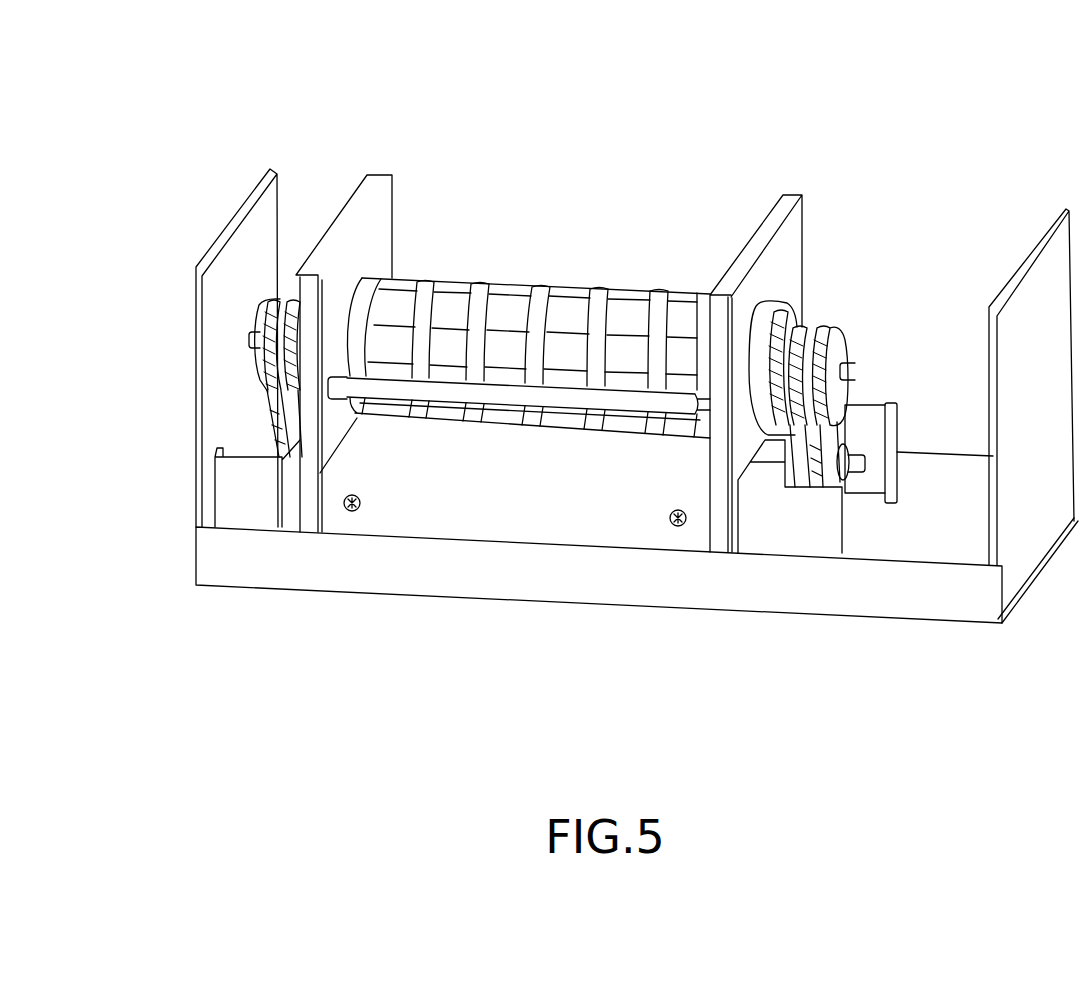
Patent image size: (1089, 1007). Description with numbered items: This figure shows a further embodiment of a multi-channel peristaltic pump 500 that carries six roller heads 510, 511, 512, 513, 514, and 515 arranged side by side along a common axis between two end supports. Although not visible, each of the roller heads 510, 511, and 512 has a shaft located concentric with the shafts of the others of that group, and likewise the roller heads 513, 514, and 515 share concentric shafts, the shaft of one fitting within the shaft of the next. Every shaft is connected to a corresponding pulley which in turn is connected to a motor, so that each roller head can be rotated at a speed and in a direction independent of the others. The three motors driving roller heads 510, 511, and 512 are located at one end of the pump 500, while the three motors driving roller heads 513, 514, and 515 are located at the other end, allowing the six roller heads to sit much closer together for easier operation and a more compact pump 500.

The pump 500 is at (1057, 655).
The roller head 510 is at (400, 300).
The roller head 511 is at (457, 310).
The roller head 512 is at (513, 310).
The roller head 513 is at (581, 310).
The roller head 514 is at (637, 310).
The roller head 515 is at (695, 323).